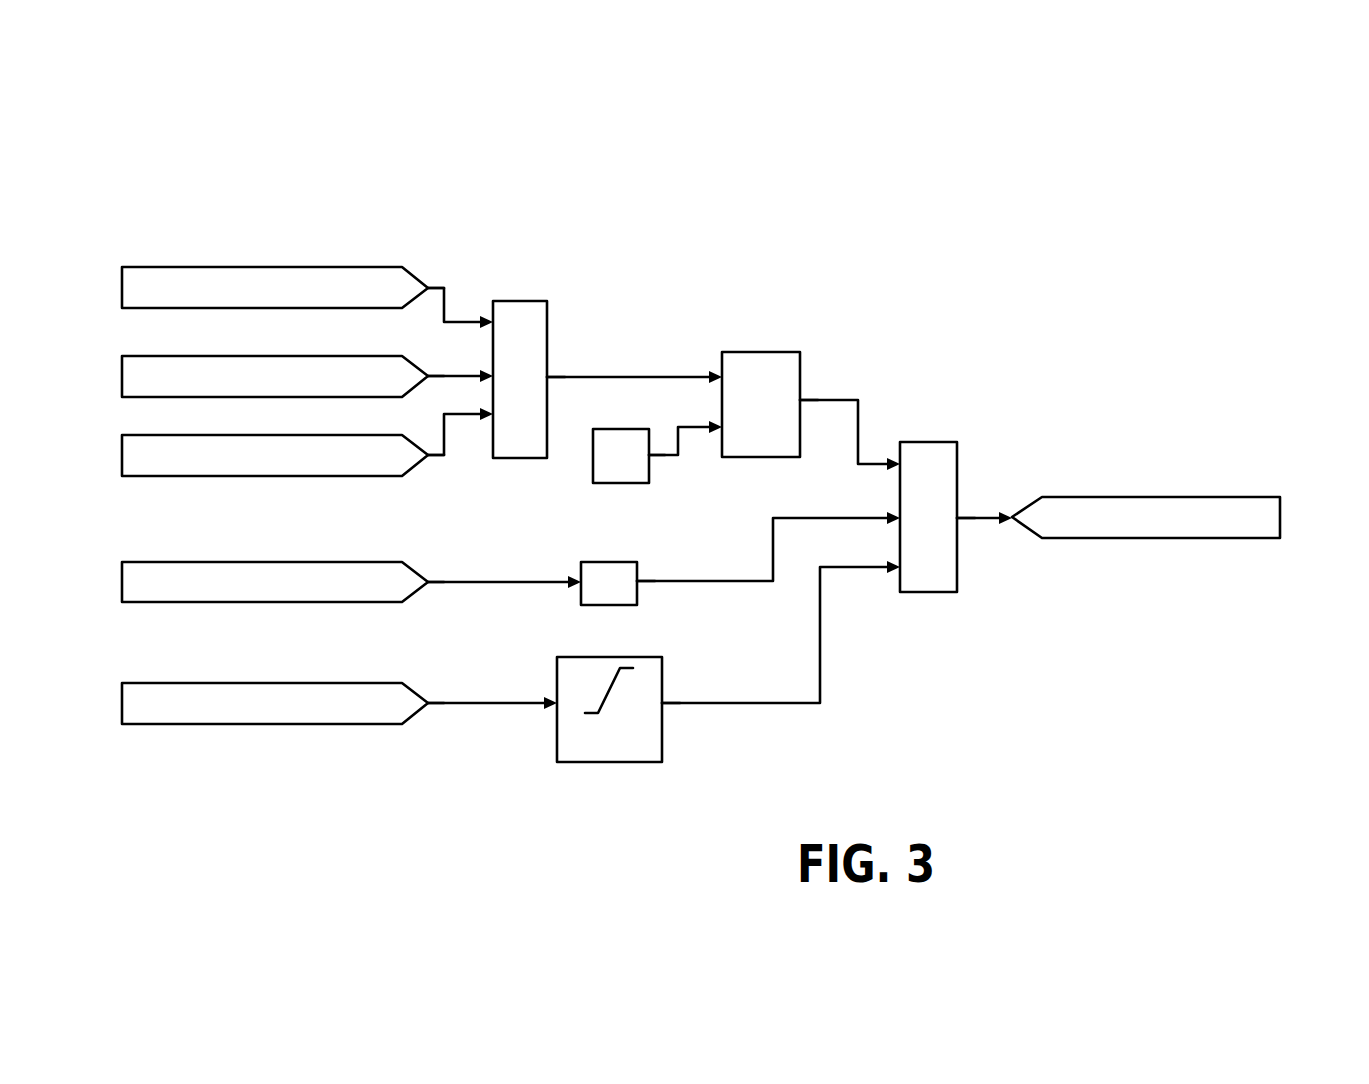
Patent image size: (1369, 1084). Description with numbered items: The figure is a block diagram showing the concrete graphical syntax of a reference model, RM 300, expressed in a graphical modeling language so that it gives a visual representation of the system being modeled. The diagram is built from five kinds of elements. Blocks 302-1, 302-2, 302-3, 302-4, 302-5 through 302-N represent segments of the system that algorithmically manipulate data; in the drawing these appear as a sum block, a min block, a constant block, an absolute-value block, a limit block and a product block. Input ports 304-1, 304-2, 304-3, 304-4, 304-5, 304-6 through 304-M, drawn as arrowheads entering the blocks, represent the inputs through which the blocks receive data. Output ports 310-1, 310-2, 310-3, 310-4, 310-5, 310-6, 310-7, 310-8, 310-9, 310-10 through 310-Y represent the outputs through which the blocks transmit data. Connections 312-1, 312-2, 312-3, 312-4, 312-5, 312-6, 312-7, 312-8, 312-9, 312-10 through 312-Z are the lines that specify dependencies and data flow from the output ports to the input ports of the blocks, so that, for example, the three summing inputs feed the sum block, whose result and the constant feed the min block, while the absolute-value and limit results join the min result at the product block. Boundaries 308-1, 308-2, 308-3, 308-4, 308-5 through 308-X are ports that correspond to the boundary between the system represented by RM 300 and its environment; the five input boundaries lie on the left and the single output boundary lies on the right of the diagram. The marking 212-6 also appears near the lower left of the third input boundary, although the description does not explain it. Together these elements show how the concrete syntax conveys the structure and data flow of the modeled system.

The reference model 300 is at (989, 172).
The block 302-1 is at (528, 301).
The block 302-2 is at (753, 352).
The block 302-3 is at (592, 448).
The block 302-4 is at (637, 588).
The block 302-5 is at (662, 720).
The block 302-N is at (957, 480).
The input port 304-1 is at (482, 320).
The input port 304-2 is at (574, 586).
The input port 304-3 is at (548, 708).
The input port 304-4 is at (710, 375).
The input port 304-5 is at (706, 430).
The input port 304-6 is at (886, 462).
The input port 304-M is at (1013, 523).
The boundary 308-1 is at (122, 298).
The boundary 308-2 is at (122, 387).
The boundary 308-3 is at (122, 466).
The boundary 308-4 is at (122, 592).
The boundary 308-5 is at (122, 713).
The boundary 308-X is at (1280, 518).
The output port 310-1 is at (428, 286).
The output port 310-2 is at (428, 374).
The output port 310-3 is at (428, 453).
The output port 310-4 is at (428, 580).
The output port 310-5 is at (428, 701).
The output port 310-6 is at (550, 374).
The output port 310-7 is at (652, 455).
The output port 310-8 is at (647, 553).
The output port 310-9 is at (664, 701).
The output port 310-10 is at (802, 399).
The output port 310-Y is at (960, 519).
The connection 312-1 is at (446, 286).
The connection 312-2 is at (437, 376).
The connection 312-3 is at (446, 460).
The connection 312-4 is at (457, 582).
The connection 312-5 is at (457, 703).
The connection 312-6 is at (610, 377).
The connection 312-7 is at (670, 455).
The connection 312-8 is at (707, 582).
The connection 312-9 is at (727, 703).
The connection 312-10 is at (860, 400).
The connection 312-Z is at (988, 520).
The range annotation 212-6 is at (213, 498).